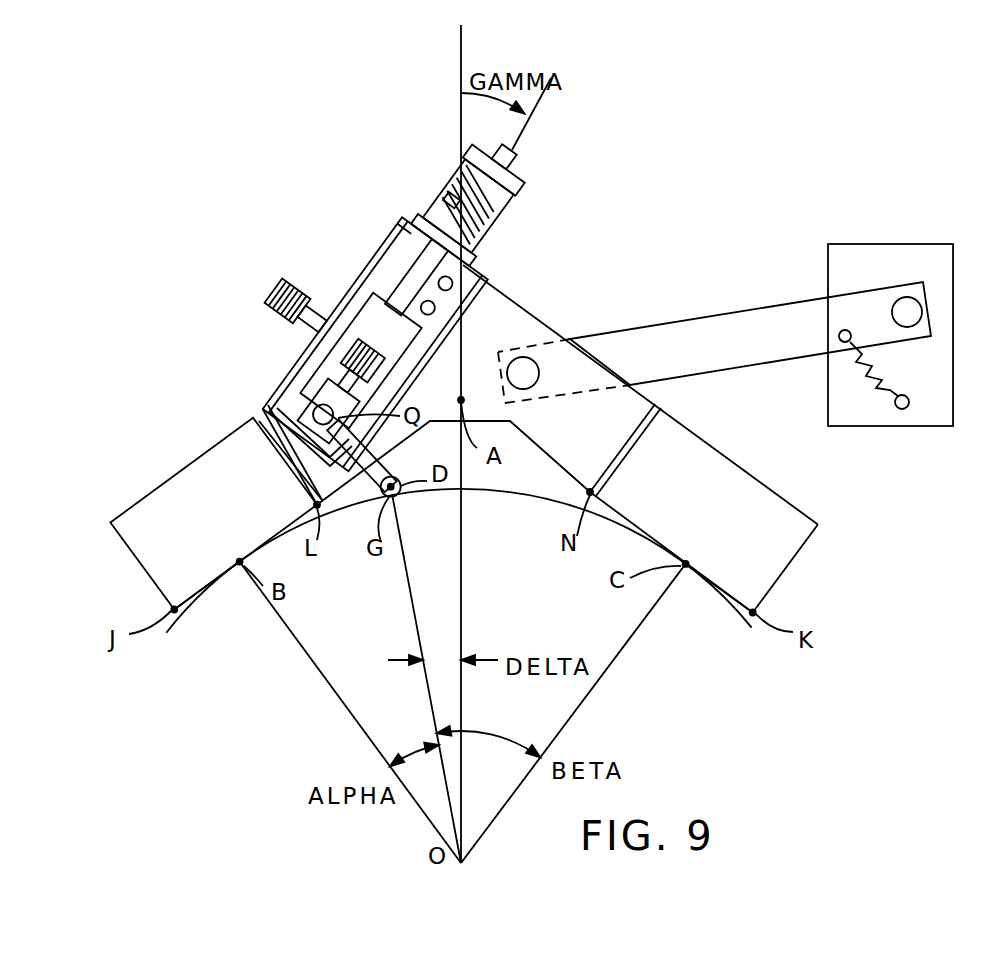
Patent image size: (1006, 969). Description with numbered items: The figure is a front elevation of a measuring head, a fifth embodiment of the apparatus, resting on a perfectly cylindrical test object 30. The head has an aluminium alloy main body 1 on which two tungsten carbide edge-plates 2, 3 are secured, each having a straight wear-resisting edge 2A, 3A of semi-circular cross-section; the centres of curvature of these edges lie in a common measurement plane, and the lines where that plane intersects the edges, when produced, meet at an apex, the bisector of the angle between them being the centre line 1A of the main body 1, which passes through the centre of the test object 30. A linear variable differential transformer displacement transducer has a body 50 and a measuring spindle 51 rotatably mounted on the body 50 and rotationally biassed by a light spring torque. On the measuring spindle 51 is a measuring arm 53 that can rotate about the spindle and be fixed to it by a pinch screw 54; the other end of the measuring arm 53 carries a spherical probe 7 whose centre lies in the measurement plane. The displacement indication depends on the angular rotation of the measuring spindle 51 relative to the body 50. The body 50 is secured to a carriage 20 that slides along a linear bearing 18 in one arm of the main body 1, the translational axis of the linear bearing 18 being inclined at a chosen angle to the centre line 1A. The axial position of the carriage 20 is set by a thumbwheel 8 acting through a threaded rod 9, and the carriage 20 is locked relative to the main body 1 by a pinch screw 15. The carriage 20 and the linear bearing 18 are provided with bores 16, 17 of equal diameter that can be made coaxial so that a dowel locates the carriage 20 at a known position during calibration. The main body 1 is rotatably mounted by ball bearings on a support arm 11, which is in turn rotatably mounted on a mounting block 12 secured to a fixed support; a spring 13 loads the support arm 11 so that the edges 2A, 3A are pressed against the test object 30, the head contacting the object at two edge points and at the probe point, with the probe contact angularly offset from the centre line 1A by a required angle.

The main body 1 is at (505, 318).
The centre line 1A is at (464, 590).
The edge-plate 2 is at (166, 493).
The wear resisting edge 2A is at (199, 594).
The edge-plate 3 is at (772, 510).
The wear resisting edge 3A is at (716, 598).
The spherical probe 7 is at (378, 486).
The thumbwheel 8 is at (440, 195).
The threaded rod 9 is at (400, 241).
The support arm 11 is at (712, 333).
The mounting block 12 is at (897, 262).
The spring 13 is at (870, 382).
The pinch screw 15 is at (286, 298).
The bore 16 is at (440, 305).
The bore 17 is at (455, 282).
The linear bearing 18 is at (352, 300).
The carriage 20 is at (398, 290).
The test object 30 is at (164, 642).
The body 50 is at (345, 362).
The measuring spindle 51 is at (305, 405).
The measuring arm 53 is at (322, 457).
The pinch screw 54 is at (312, 322).